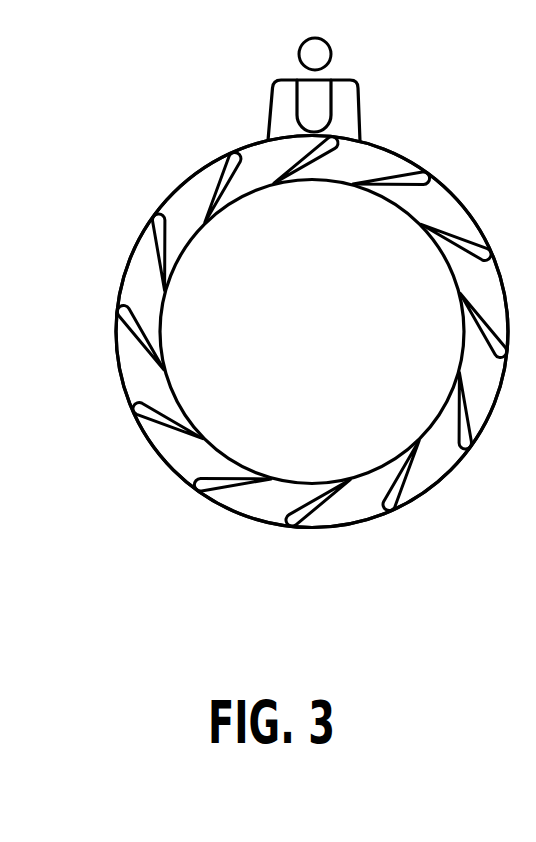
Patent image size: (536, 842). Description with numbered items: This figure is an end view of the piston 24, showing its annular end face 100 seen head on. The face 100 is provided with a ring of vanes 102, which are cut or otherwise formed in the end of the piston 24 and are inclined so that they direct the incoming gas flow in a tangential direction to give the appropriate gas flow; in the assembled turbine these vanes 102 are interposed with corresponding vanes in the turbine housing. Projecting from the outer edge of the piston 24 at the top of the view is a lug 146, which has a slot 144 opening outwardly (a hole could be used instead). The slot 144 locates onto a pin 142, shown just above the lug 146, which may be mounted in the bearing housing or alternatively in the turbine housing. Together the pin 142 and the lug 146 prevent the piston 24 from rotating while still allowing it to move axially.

The piston 24 is at (463, 206).
The face 100 is at (158, 390).
The vanes 102 is at (165, 230).
The pin 142 is at (317, 52).
The slot 144 is at (328, 112).
The lug 146 is at (272, 107).